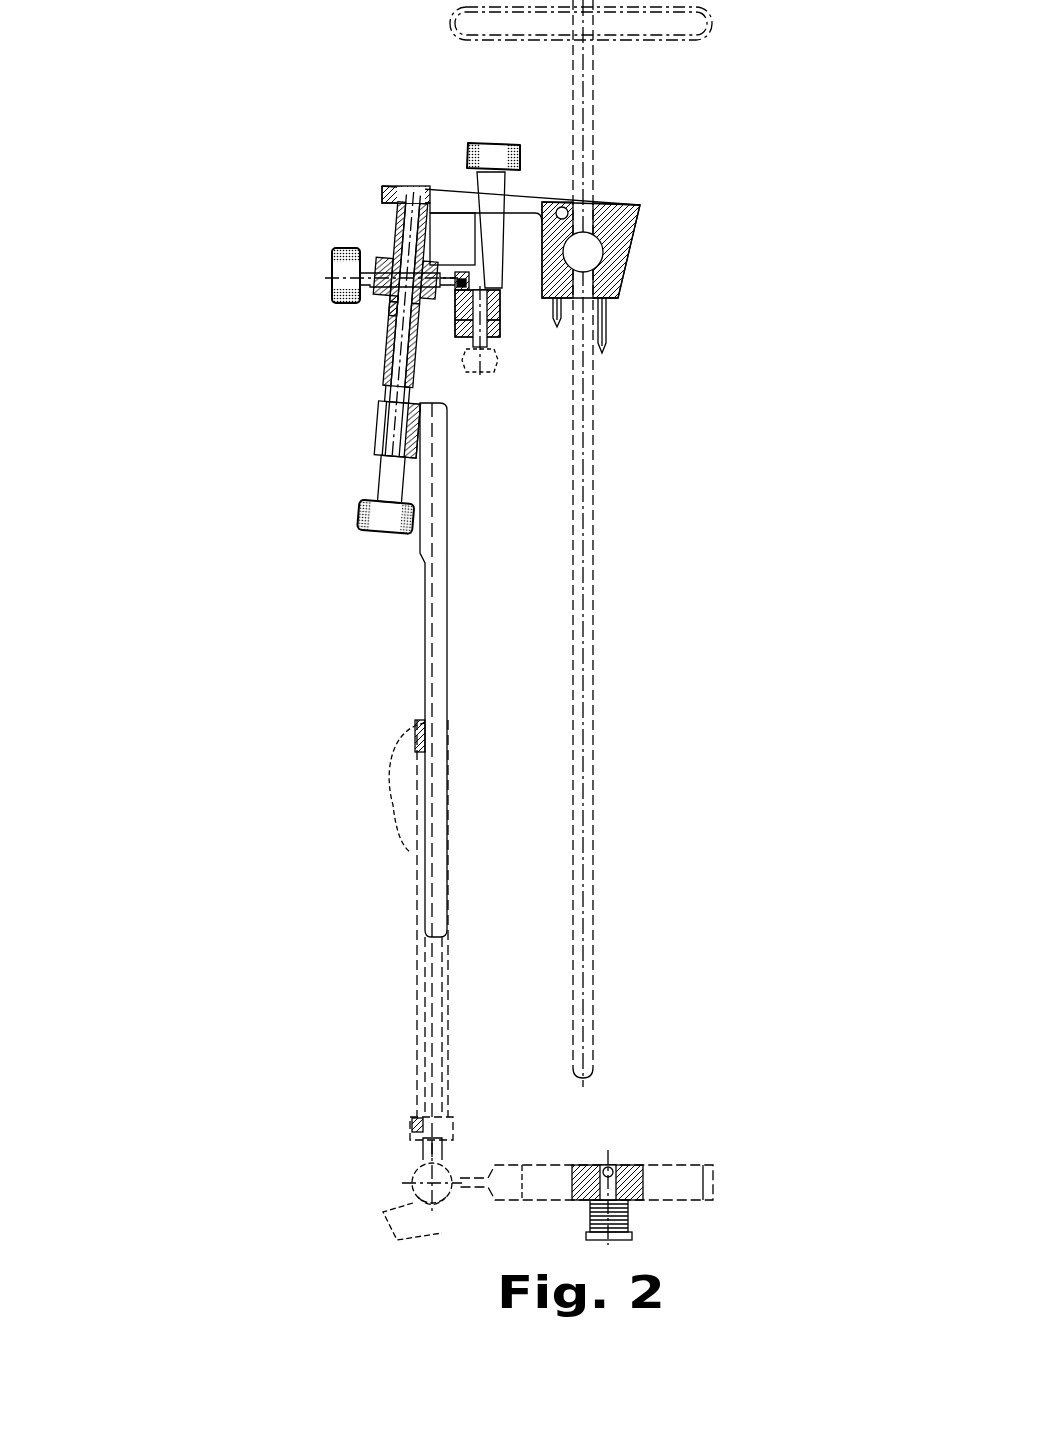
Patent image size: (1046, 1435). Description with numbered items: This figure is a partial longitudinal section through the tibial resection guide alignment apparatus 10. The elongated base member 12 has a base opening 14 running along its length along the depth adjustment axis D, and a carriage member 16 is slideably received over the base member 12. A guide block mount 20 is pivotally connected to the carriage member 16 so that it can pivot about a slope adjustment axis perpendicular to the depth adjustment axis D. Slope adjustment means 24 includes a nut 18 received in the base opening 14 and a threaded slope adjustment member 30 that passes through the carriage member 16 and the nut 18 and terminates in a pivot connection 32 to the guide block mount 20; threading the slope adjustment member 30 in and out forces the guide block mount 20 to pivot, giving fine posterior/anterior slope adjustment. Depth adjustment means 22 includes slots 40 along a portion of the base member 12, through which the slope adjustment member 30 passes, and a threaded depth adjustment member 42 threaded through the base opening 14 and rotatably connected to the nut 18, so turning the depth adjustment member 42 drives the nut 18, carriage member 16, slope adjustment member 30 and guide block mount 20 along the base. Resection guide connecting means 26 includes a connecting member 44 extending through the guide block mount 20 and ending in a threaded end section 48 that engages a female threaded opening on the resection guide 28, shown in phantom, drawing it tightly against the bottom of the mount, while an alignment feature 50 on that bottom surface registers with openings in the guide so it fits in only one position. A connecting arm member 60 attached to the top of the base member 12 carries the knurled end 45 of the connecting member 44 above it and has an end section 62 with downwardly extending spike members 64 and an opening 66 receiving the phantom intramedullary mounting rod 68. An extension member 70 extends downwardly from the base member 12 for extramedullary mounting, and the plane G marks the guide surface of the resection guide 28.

The tibial resection guide alignment apparatus 10 is at (275, 208).
The base member 12 is at (388, 375).
The base opening 14 is at (398, 250).
The carriage member 16 is at (392, 296).
The nut 18 is at (396, 308).
The guide block mount 20 is at (503, 322).
The depth adjustment means 22 is at (298, 460).
The slope adjustment means 24 is at (272, 318).
The resection guide connecting means 26 is at (530, 182).
The resection guide 28 is at (468, 322).
The slope adjustment member 30 is at (350, 262).
The pivot connection 32 is at (470, 288).
The slots 40 is at (418, 258).
The depth adjustment member 42 is at (373, 485).
The connecting member 44 is at (485, 255).
The knurled end 45 is at (477, 147).
The threaded end section 48 is at (487, 325).
The alignment feature 50 is at (456, 322).
The connecting arm member 60 is at (537, 200).
The end section 62 is at (637, 242).
The spike members 64 is at (559, 329).
The opening 66 is at (607, 202).
The intramedullary mounting rod 68 is at (597, 533).
The extension member 70 is at (427, 678).
The depth adjustment axis D is at (417, 187).
The plane of the resection guide guide surface G is at (540, 328).